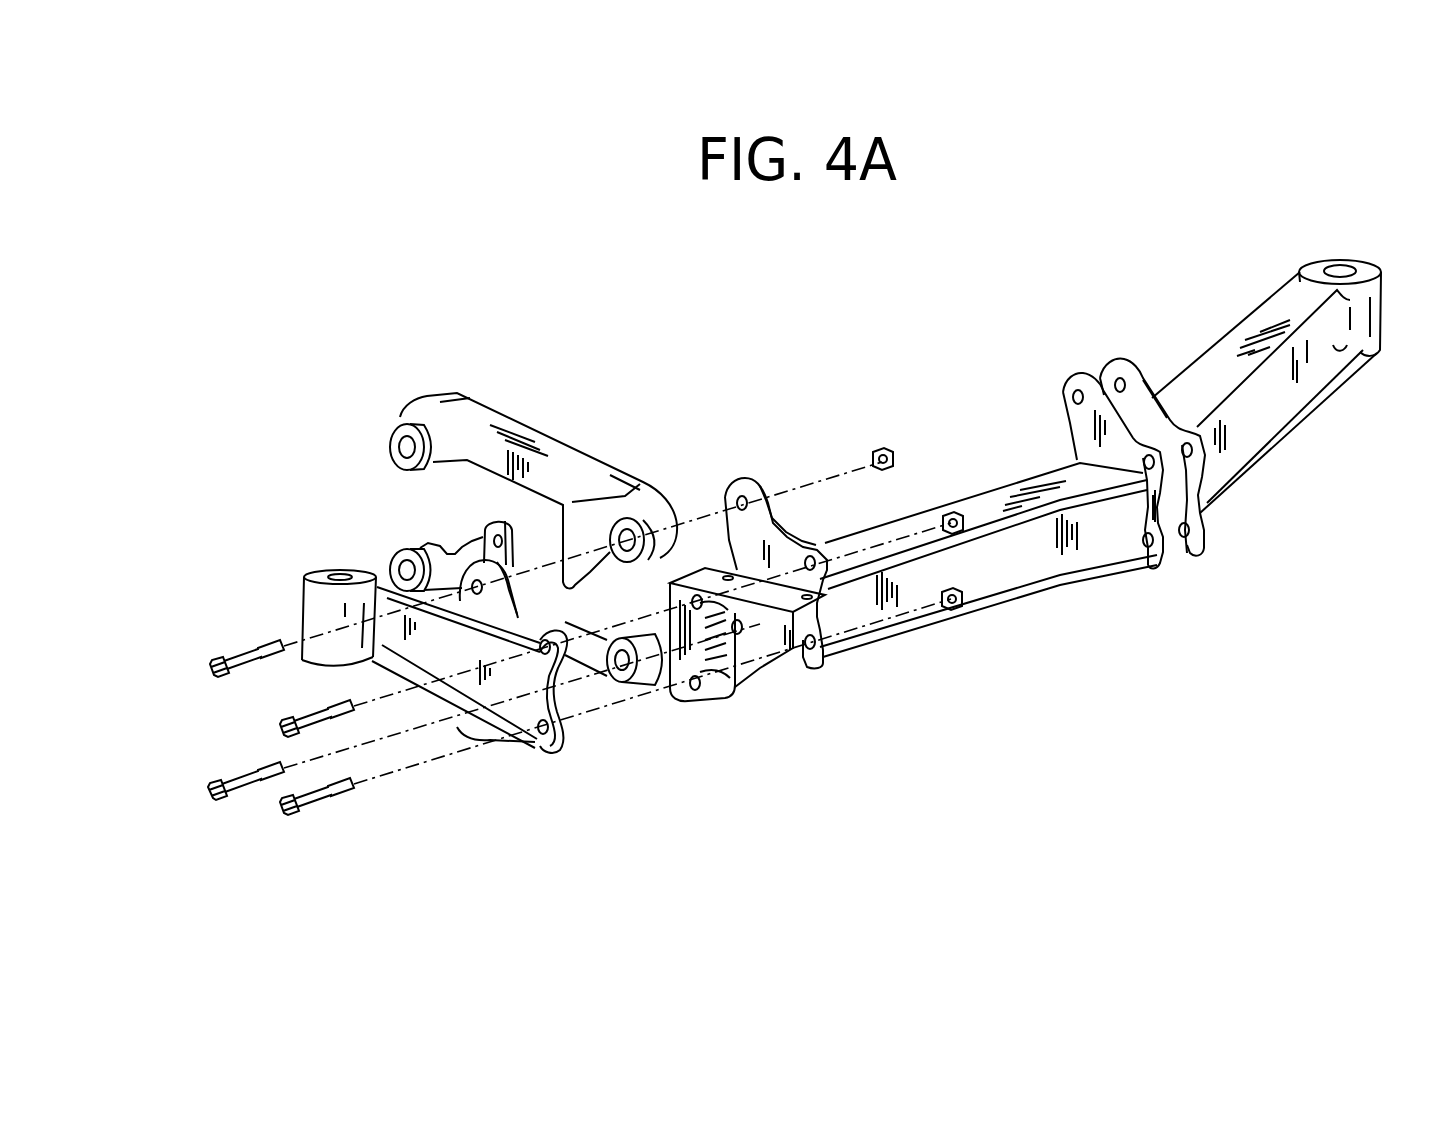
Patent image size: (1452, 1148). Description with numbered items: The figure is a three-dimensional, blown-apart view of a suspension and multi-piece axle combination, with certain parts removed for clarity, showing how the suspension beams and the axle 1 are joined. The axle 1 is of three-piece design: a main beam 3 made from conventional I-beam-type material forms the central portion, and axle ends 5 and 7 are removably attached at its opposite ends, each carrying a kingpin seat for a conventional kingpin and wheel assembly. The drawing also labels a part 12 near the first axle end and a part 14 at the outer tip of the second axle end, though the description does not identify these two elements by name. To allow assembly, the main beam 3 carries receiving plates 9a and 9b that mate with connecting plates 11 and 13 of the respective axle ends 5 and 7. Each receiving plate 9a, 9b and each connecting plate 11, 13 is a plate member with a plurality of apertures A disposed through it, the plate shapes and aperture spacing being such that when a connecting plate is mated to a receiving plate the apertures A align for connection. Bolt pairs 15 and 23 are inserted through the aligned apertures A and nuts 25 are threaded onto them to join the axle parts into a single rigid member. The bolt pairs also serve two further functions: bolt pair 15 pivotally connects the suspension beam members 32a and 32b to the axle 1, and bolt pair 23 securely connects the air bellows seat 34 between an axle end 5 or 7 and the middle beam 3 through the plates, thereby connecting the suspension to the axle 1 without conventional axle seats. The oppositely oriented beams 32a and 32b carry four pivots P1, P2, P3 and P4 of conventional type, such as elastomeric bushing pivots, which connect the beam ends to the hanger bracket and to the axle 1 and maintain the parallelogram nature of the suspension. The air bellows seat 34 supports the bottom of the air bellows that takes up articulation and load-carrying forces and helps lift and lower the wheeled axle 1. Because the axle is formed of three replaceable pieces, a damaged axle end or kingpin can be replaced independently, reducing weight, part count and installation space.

The axle 1 is at (953, 428).
The main beam 3 is at (1087, 555).
The axle end 5 is at (387, 580).
The axle end 7 is at (1273, 407).
The receiving plate 9a is at (742, 478).
The receiving plate 9b is at (1075, 423).
The connecting plate 11 is at (549, 752).
The spacer sleeve 12 is at (313, 583).
The connecting plate 13 is at (1133, 393).
The boss 14 is at (1317, 267).
The bolt pair 15 is at (208, 790).
The bolt pair 23 is at (280, 806).
The nuts 25 is at (893, 458).
The suspension beam member 32a is at (502, 445).
The suspension beam member 32b is at (577, 663).
The air bellows seat 34 is at (725, 692).
The pivot P1 is at (390, 440).
The pivot P2 is at (663, 497).
The pivot P3 is at (403, 552).
The pivot P4 is at (628, 684).
The apertures A is at (1148, 547).